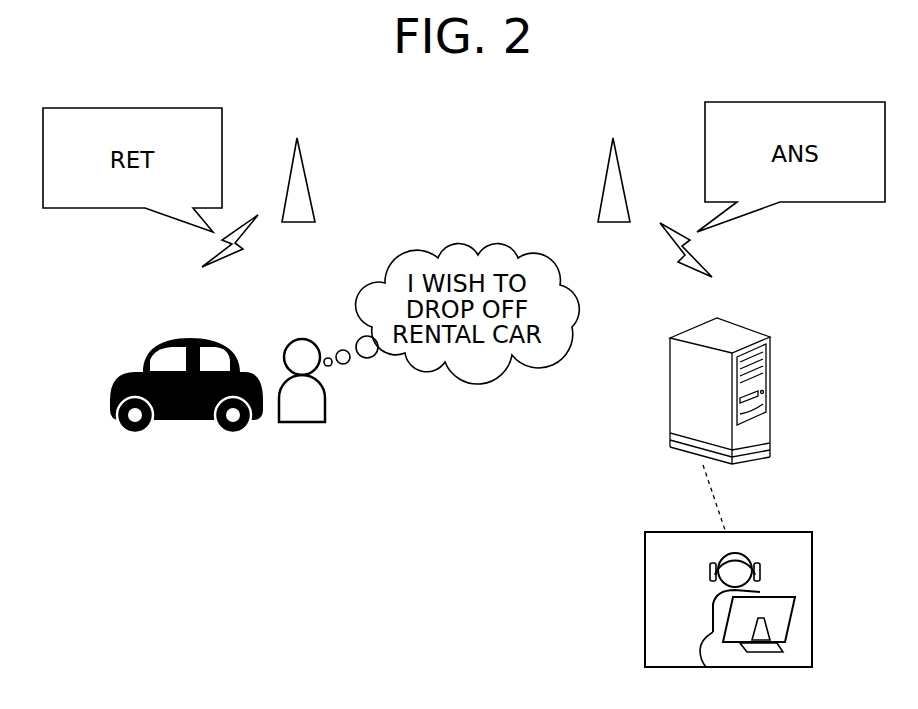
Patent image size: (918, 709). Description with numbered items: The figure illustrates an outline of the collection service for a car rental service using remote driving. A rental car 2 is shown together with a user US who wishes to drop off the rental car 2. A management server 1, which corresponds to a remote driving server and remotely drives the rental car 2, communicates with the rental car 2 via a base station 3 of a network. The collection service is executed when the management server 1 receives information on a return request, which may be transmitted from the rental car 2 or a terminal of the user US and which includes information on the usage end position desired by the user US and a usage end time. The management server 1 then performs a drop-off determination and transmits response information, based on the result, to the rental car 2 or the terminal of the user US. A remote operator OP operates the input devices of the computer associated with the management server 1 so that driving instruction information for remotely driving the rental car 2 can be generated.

The management server 1 is at (762, 305).
The rental car 2 is at (257, 322).
The base station 3 is at (293, 160).
The user US is at (327, 411).
The remote operator OP is at (705, 668).